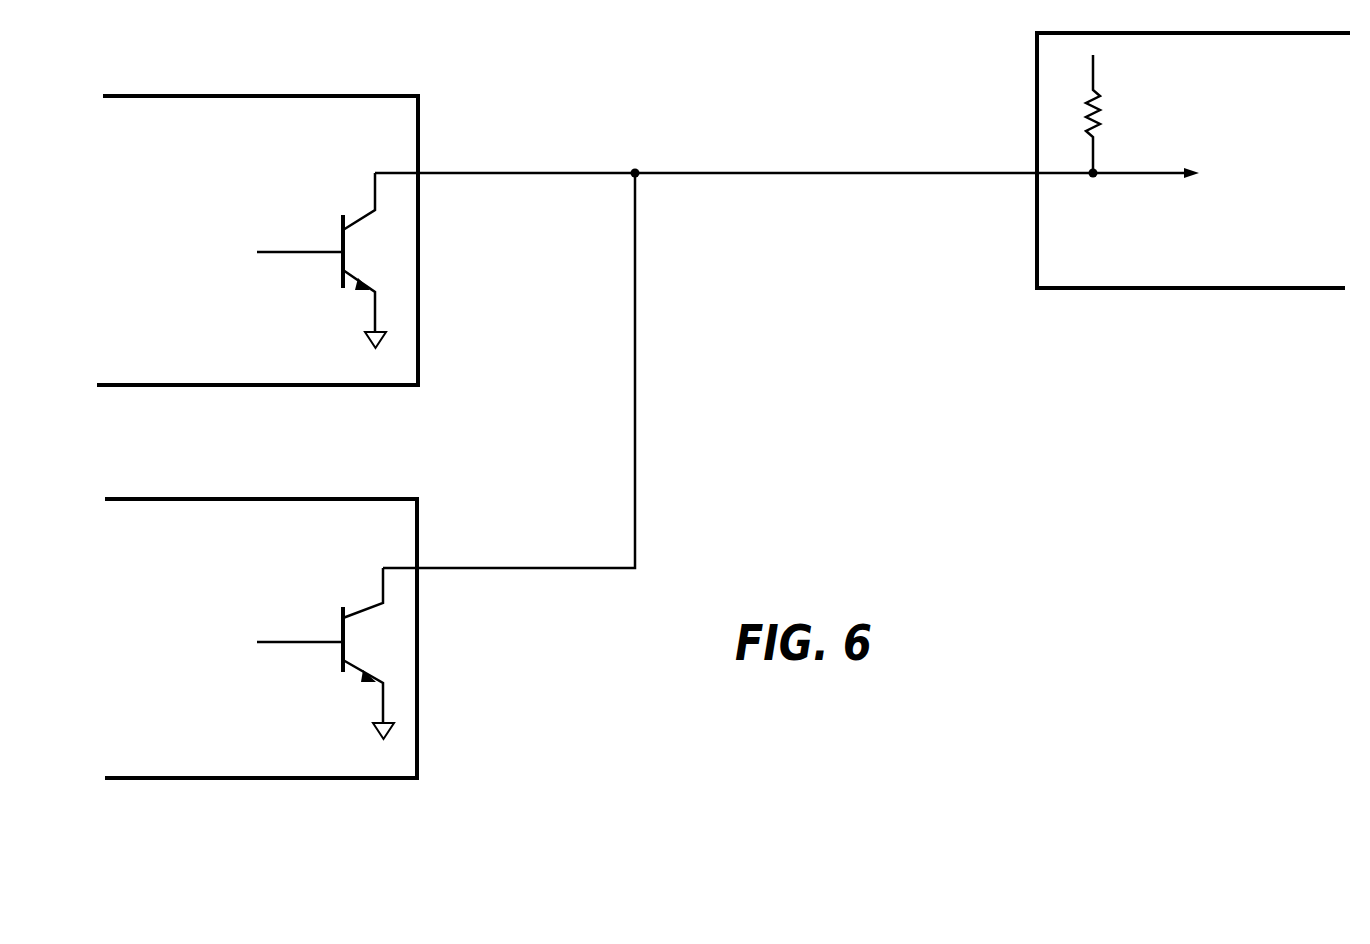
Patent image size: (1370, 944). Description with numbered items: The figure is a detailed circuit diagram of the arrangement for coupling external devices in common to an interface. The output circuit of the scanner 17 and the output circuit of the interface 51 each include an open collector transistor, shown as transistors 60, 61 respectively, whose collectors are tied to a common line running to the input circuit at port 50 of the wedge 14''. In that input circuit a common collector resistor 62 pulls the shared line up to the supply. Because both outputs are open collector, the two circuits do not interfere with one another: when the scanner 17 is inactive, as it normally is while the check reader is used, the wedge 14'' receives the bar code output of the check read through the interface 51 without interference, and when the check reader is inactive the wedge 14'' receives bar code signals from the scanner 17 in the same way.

The scanner 17 is at (295, 240).
The open collector transistor 60 is at (338, 262).
The interface 51 is at (297, 638).
The open collector transistor 61 is at (340, 652).
The port 50 is at (1156, 161).
The wedge 14'' is at (787, 368).
The pull-up resistor 62 is at (1100, 118).